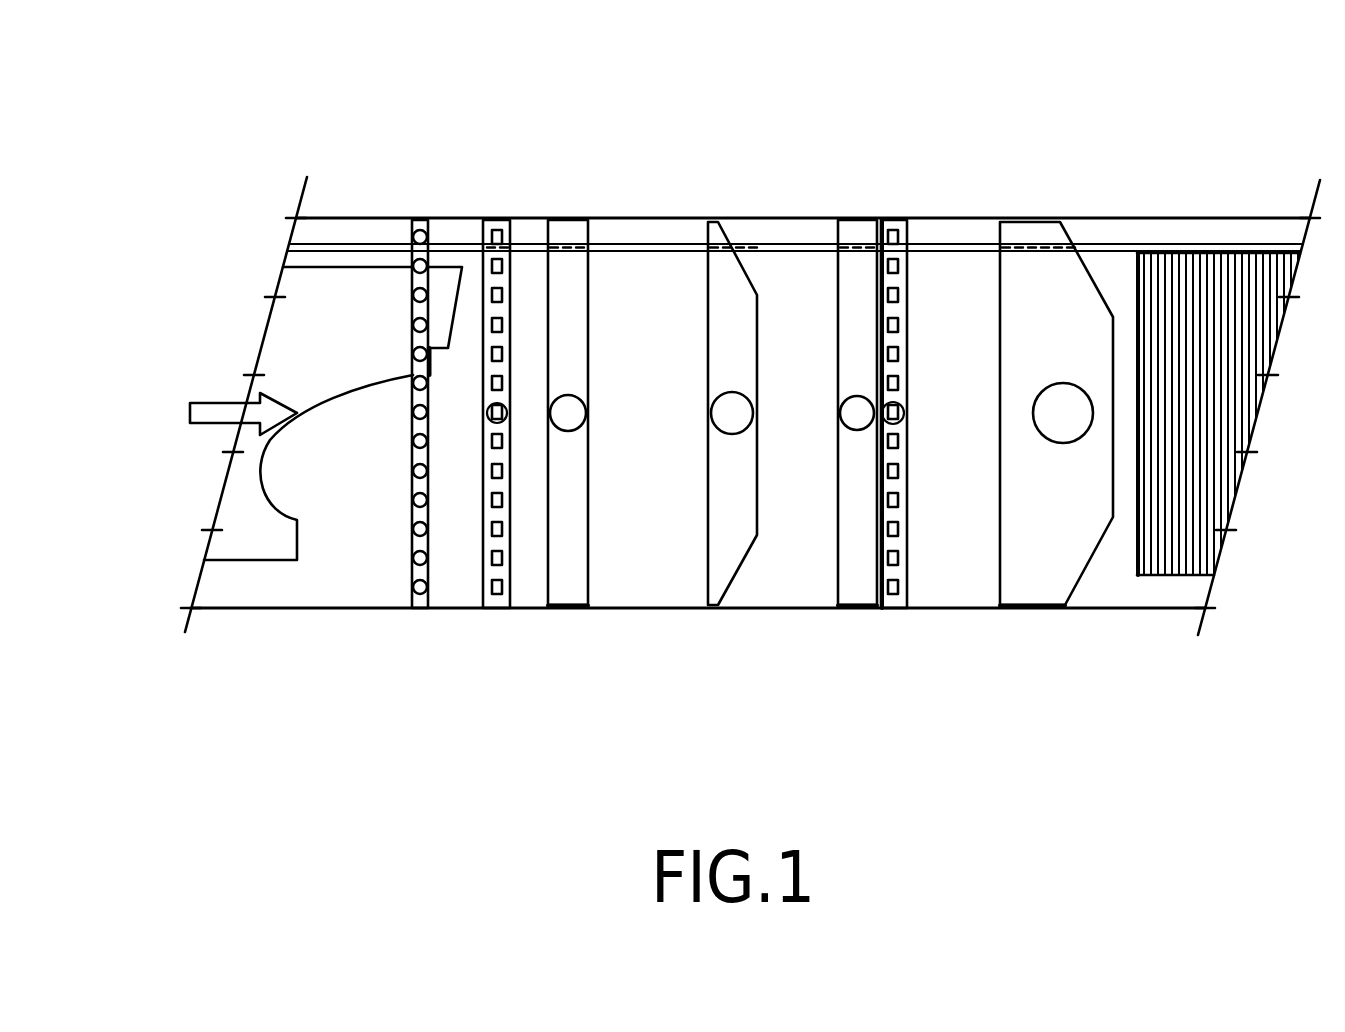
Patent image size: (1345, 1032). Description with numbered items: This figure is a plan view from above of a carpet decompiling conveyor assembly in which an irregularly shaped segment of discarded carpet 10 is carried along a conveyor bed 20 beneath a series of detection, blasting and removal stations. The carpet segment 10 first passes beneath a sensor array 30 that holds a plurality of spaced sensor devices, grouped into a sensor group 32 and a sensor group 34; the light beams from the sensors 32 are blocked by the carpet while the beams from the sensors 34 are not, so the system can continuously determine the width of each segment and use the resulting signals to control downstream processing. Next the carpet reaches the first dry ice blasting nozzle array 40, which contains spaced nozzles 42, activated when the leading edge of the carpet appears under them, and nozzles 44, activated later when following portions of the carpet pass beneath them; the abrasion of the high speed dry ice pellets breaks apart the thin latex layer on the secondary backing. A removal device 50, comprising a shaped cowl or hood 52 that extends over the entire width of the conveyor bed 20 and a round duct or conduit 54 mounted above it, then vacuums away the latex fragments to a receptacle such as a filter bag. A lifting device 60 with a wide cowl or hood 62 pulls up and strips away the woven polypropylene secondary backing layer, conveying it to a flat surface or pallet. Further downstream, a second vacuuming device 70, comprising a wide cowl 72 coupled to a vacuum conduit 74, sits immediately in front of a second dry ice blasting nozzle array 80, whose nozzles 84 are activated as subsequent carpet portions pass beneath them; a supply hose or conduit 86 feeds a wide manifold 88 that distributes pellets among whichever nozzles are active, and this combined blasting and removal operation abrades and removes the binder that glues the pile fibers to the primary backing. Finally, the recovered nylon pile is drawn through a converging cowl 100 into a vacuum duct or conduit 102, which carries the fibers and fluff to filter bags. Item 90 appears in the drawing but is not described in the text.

The carpet segment 10 is at (326, 285).
The conveyor bed 20 is at (727, 78).
The sensor array 30 is at (389, 319).
The sensor group 32 is at (404, 299).
The sensor group 34 is at (404, 531).
The first dry ice blasting nozzle array 40 is at (653, 319).
The nozzles 42 is at (518, 290).
The dry ice blasting nozzles 44 is at (518, 497).
The removal device 50 is at (613, 318).
The cowl or hood 52 is at (590, 393).
The duct or conduit 54 is at (590, 436).
The lifting device 60 is at (674, 363).
The cowl or hood 62 is at (696, 572).
The second vacuuming device 70 is at (778, 363).
The cowl 72 is at (826, 572).
The vacuum conduit 74 is at (838, 397).
The second dry ice blasting nozzle array 80 is at (934, 319).
The dry ice blasting nozzles 84 is at (915, 533).
The supply hose or conduit 86 is at (906, 421).
The manifold 88 is at (908, 370).
The second baffle 90 is at (1093, 363).
The converging cowl 100 is at (1098, 265).
The vacuum duct or conduit 102 is at (1073, 447).